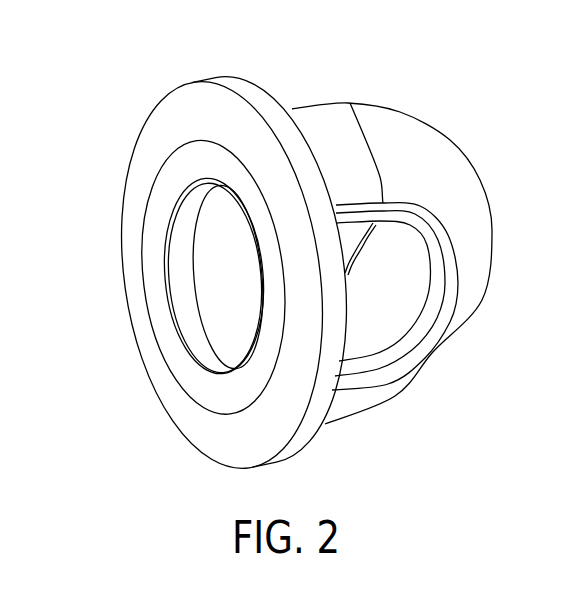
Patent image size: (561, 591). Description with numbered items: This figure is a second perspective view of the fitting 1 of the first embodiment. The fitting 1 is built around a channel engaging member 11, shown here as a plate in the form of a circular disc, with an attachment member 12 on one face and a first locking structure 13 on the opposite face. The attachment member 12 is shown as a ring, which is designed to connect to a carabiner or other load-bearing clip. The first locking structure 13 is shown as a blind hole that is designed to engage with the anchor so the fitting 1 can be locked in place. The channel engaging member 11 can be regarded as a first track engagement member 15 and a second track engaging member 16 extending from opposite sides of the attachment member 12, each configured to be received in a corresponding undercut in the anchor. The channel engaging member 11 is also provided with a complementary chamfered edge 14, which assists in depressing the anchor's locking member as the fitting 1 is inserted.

The fitting 1 is at (277, 247).
The channel engaging member 11 is at (227, 78).
The attachment member 12 is at (385, 118).
The first locking structure 13 is at (218, 312).
The chamfered edge 14 is at (150, 160).
The first track engagement member 15 is at (337, 337).
The second track engaging member 16 is at (123, 223).